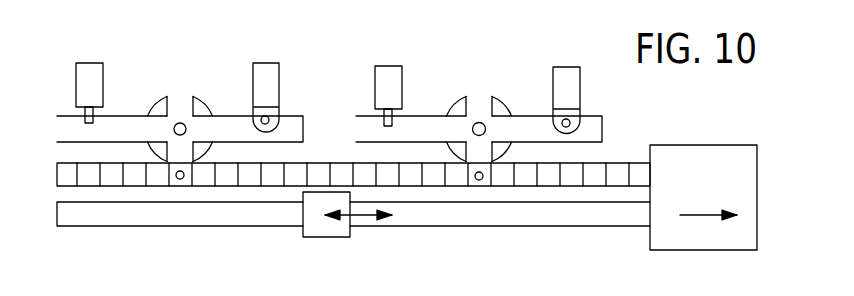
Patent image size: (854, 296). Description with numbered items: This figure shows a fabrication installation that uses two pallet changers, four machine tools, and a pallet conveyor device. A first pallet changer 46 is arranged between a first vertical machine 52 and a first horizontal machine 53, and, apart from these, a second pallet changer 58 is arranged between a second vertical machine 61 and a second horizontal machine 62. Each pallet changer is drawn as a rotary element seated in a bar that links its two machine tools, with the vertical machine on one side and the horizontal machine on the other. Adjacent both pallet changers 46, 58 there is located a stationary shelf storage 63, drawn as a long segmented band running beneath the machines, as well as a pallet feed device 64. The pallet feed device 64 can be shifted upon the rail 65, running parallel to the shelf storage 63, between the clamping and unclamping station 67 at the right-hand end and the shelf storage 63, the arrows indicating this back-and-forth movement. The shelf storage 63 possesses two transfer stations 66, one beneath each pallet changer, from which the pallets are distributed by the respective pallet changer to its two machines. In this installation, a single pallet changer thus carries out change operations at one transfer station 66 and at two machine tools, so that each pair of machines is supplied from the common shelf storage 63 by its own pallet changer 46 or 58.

The first pallet changer 46 is at (180, 98).
The first vertical machine 52 is at (265, 67).
The first horizontal machine 53 is at (88, 65).
The second pallet changer 58 is at (480, 100).
The second vertical machine 61 is at (560, 78).
The second horizontal machine 62 is at (388, 72).
The stationary shelf storage 63 is at (320, 172).
The pallet feed device 64 is at (327, 238).
The rail 65 is at (546, 218).
The transfer station 66 is at (184, 182).
The clamping and unclamping station 67 is at (697, 157).